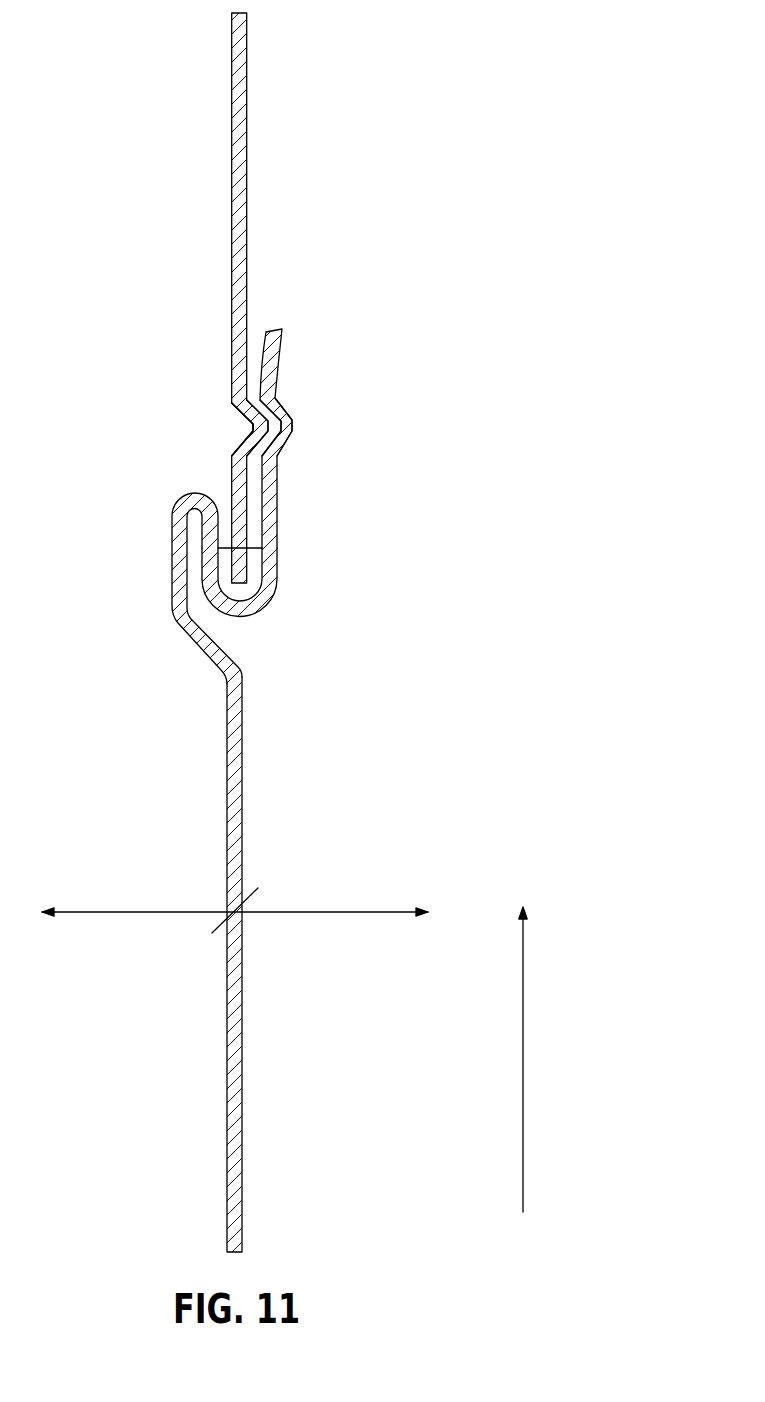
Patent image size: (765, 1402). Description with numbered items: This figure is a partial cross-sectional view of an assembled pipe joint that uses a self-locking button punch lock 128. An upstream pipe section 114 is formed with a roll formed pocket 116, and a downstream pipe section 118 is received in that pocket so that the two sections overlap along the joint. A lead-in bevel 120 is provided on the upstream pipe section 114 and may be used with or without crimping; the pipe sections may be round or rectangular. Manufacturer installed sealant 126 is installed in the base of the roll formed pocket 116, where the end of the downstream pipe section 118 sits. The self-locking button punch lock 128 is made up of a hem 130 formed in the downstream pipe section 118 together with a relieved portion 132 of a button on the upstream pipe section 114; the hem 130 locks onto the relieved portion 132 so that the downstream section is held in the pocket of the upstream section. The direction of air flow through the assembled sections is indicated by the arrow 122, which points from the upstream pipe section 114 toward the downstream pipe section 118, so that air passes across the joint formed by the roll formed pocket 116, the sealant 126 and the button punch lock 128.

The upstream pipe section 114 is at (211, 985).
The roll formed pocket 116 is at (150, 563).
The downstream pipe section 118 is at (216, 193).
The lead-in bevel 120 is at (291, 354).
The arrow 122 is at (523, 1073).
The manufacturer installed sealant 126 is at (289, 601).
The self-locking button punch lock 128 is at (233, 426).
The hem 130 is at (258, 438).
The relieved portion 132 is at (288, 440).